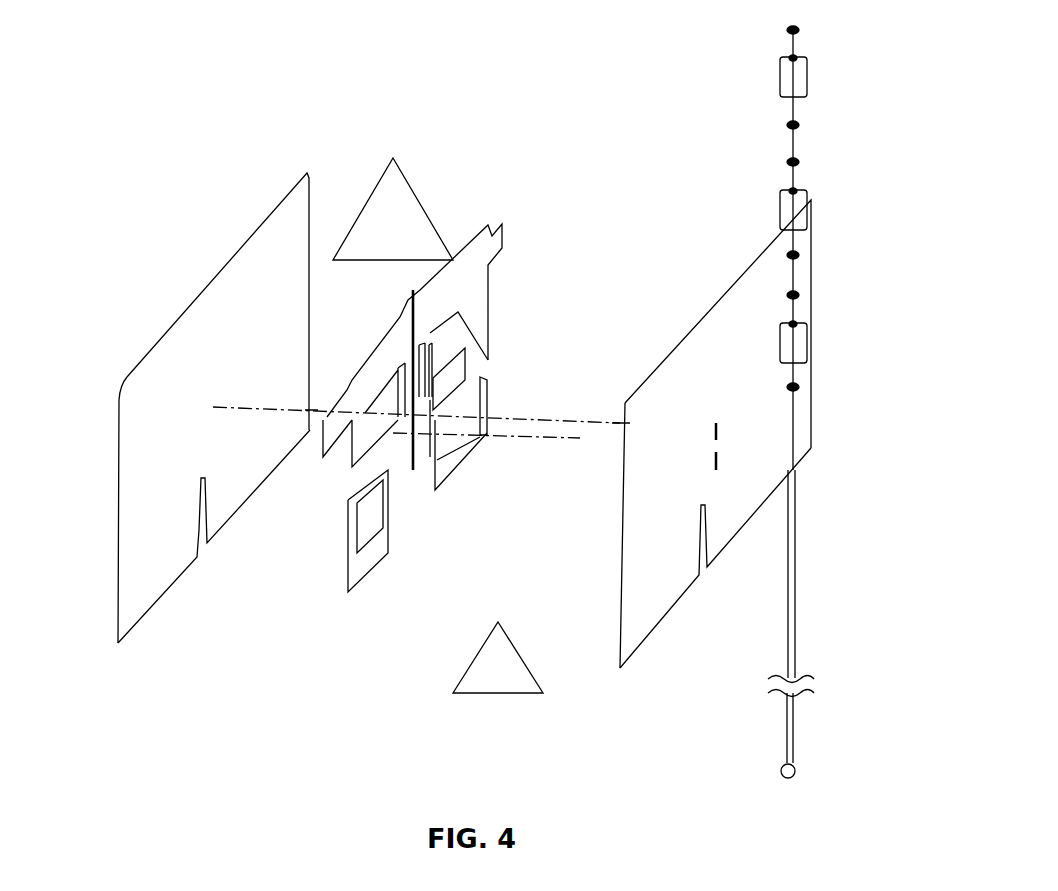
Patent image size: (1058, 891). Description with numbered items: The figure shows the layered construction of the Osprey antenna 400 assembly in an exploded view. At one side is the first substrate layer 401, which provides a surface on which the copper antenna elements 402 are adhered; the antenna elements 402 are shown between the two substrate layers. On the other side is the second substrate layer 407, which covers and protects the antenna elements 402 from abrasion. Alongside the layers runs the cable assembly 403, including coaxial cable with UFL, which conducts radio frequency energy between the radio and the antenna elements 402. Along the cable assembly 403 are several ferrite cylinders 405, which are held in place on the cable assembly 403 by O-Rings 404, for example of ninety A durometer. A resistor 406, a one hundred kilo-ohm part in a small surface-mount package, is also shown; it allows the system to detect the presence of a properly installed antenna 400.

The Osprey antenna assembly 400 is at (138, 97).
The first substrate layer 401 is at (118, 503).
The copper antenna elements 402 is at (465, 247).
The cable assembly 403 is at (800, 592).
The O-Rings 404 is at (787, 382).
The ferrite cylinders 405 is at (808, 325).
The resistor 406 is at (580, 440).
The second substrate layer 407 is at (617, 558).